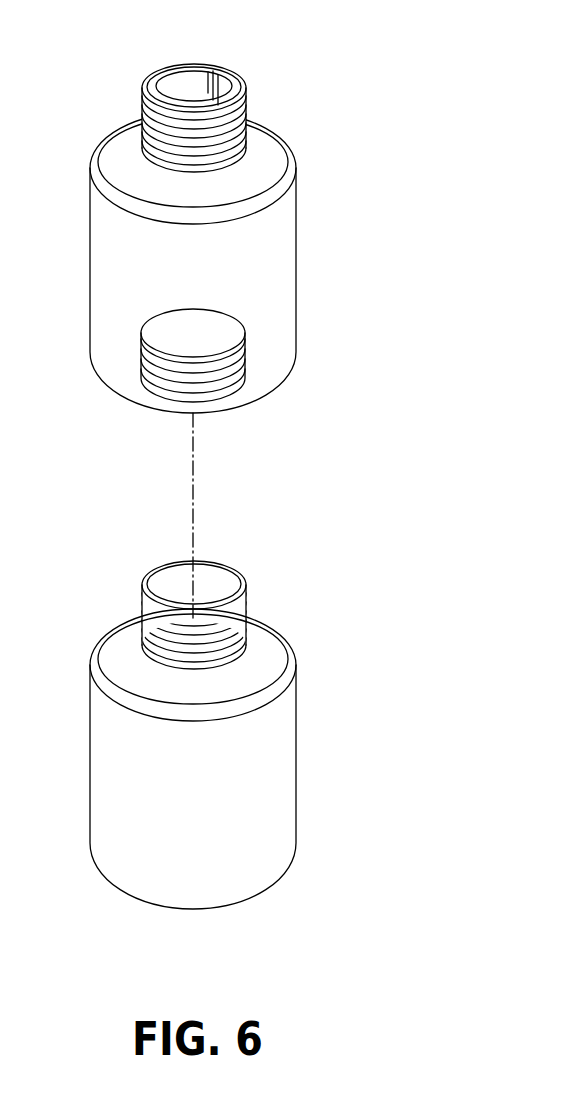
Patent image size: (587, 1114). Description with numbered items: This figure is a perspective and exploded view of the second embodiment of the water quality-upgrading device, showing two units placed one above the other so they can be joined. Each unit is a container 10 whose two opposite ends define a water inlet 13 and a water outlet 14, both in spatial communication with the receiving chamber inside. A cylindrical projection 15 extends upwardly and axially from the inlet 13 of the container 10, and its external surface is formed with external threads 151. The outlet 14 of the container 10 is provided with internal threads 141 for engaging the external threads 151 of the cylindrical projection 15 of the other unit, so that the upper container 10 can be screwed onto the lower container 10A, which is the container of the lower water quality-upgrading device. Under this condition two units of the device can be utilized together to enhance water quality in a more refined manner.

The container 10 is at (300, 124).
The container of the lower water quality-upgrading device 10A is at (313, 625).
The water inlet 13 is at (193, 80).
The water outlet 14 is at (268, 349).
The internal threads 141 is at (237, 384).
The cylindrical projection 15 is at (173, 338).
The external threads 151 is at (142, 118).